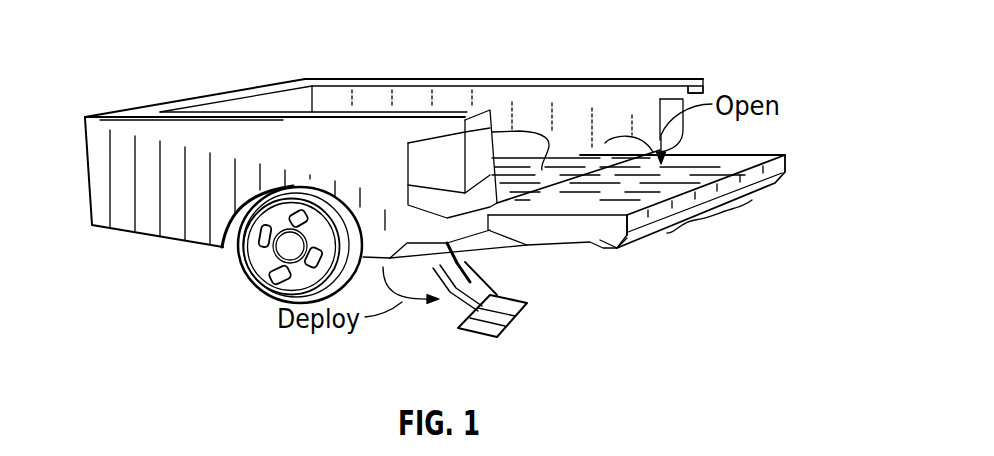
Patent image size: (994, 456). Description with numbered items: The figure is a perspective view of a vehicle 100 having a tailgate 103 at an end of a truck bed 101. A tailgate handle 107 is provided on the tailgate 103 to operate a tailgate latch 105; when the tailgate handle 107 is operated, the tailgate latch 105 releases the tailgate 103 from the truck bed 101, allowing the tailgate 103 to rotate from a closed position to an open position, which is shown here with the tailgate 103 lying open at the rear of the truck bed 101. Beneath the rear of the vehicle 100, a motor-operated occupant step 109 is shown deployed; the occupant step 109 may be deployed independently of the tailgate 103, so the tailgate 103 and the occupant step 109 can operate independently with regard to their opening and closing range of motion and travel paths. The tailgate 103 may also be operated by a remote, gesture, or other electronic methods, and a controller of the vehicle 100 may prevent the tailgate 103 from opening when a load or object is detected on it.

The vehicle 100 is at (134, 57).
The truck bed 101 is at (543, 173).
The tailgate 103 is at (790, 145).
The tailgate latch 105 is at (702, 88).
The tailgate handle 107 is at (713, 225).
The occupant step 109 is at (515, 348).